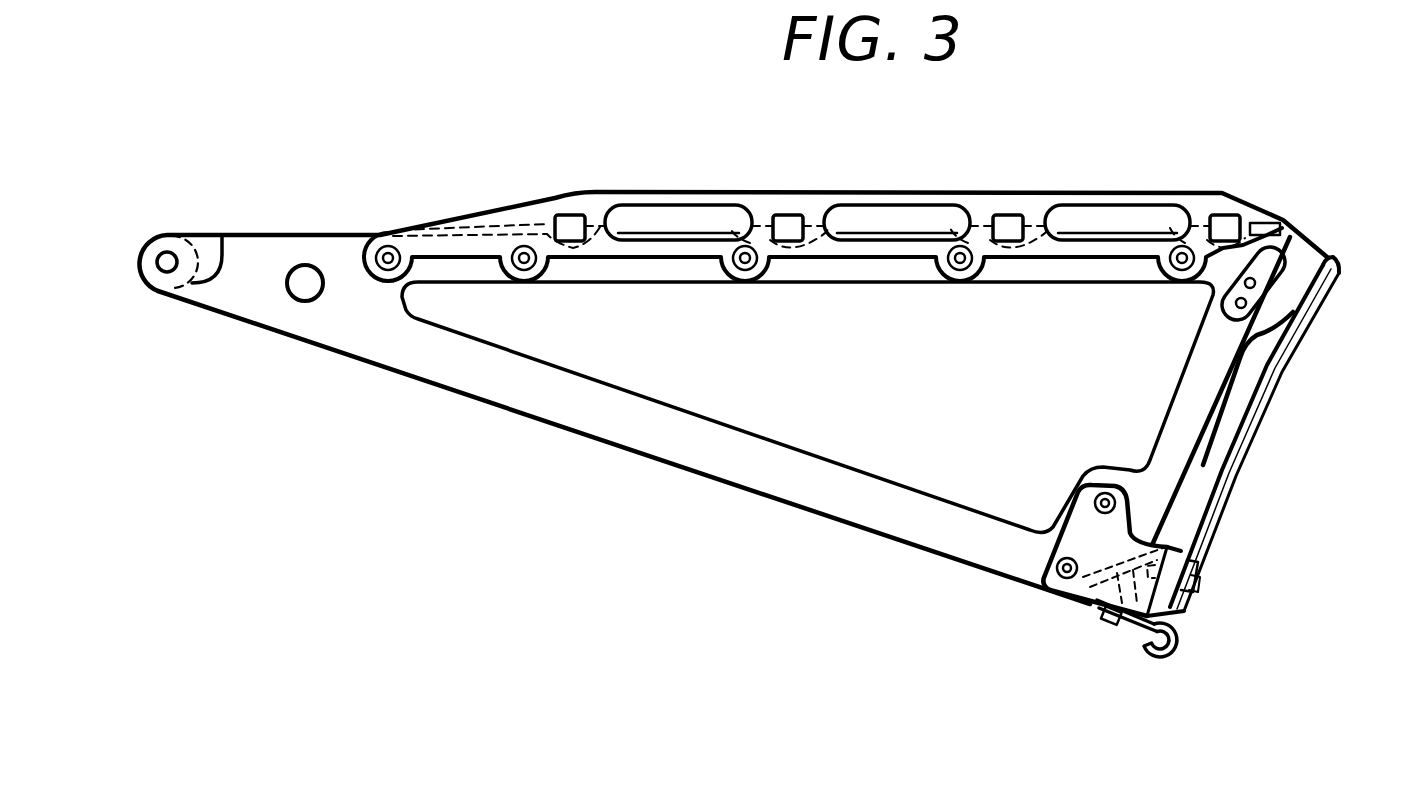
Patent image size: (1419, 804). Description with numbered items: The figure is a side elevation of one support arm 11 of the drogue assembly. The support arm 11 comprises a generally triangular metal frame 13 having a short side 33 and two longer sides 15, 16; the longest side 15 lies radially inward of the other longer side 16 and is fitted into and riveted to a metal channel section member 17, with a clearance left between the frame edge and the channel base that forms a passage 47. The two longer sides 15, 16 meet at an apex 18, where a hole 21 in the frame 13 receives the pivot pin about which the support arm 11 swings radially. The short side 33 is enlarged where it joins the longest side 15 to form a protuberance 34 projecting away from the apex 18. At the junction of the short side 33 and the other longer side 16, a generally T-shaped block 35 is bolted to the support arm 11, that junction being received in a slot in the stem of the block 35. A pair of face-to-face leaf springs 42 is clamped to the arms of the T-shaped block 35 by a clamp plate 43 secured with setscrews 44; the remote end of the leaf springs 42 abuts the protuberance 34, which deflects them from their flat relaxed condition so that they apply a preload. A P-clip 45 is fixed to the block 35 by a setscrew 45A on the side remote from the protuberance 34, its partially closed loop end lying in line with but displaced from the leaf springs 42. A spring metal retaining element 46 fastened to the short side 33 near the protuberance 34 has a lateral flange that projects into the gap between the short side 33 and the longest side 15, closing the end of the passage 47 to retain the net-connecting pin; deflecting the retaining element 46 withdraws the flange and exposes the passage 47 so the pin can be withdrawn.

The support arm 11 is at (286, 343).
The metal frame 13 is at (662, 461).
The longer side 15 is at (656, 268).
The longer side 16 is at (813, 478).
The channel section member 17 is at (762, 203).
The apex 18 is at (222, 235).
The hole 21 is at (164, 252).
The short side 33 is at (1188, 400).
The protuberance 34 is at (1325, 250).
The block 35 is at (1073, 603).
The leaf springs 42 is at (1233, 421).
The clamp plate 43 is at (1175, 608).
The setscrews 44 is at (1197, 583).
The P-clip 45 is at (1170, 653).
The setscrew 45A is at (1110, 623).
The retaining element 46 is at (1317, 258).
The passage 47 is at (1200, 235).